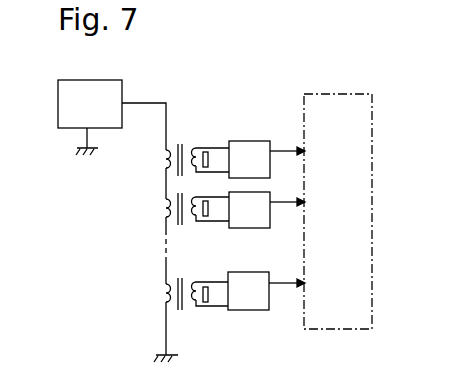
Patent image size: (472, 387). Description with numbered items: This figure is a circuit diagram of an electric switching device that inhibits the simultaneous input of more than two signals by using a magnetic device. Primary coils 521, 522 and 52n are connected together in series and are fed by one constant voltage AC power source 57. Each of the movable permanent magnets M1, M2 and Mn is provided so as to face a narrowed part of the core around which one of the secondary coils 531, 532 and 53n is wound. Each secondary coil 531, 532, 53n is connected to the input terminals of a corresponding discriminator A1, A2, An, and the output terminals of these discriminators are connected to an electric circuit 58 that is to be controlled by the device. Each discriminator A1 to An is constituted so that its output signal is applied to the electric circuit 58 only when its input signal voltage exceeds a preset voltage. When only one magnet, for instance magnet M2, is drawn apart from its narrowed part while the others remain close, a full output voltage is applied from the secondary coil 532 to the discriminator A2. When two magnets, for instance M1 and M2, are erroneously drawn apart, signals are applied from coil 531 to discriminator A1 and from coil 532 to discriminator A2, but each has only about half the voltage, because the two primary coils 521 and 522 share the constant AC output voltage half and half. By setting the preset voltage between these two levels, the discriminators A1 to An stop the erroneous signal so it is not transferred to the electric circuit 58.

The constant voltage AC power source 57 is at (90, 117).
The electric circuit 58 is at (338, 211).
The primary coil 521 is at (163, 155).
The primary coil 522 is at (163, 205).
The primary coil 52n is at (163, 290).
The secondary coil 531 is at (192, 148).
The secondary coil 532 is at (194, 219).
The secondary coil 53n is at (193, 306).
The movable permanent magnet M1 is at (206, 152).
The movable permanent magnet M2 is at (207, 216).
The movable permanent magnet Mn is at (208, 302).
The discriminator A1 is at (267, 159).
The discriminator A2 is at (267, 210).
The discriminator An is at (266, 291).